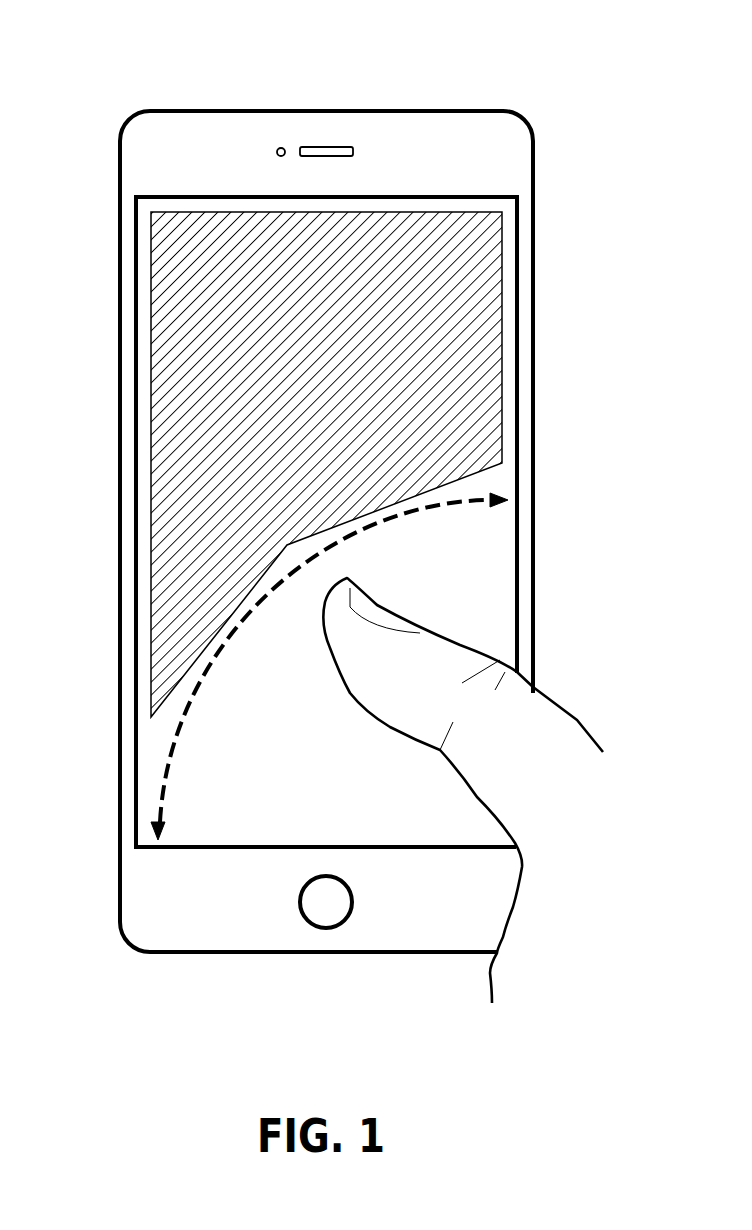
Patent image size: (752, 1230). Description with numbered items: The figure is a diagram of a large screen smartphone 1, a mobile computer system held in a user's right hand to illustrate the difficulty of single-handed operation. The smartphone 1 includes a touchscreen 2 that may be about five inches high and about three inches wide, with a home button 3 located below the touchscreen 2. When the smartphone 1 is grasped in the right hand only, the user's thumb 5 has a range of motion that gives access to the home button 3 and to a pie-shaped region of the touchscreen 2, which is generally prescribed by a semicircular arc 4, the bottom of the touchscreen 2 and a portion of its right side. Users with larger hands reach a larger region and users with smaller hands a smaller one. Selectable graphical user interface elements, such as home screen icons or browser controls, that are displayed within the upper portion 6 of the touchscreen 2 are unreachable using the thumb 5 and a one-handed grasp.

The large screen smartphone 1 is at (553, 70).
The touchscreen 2 is at (517, 197).
The home button 3 is at (313, 925).
The semicircular arc 4 is at (508, 492).
The thumb 5 is at (577, 720).
The upper portion 6 is at (152, 213).